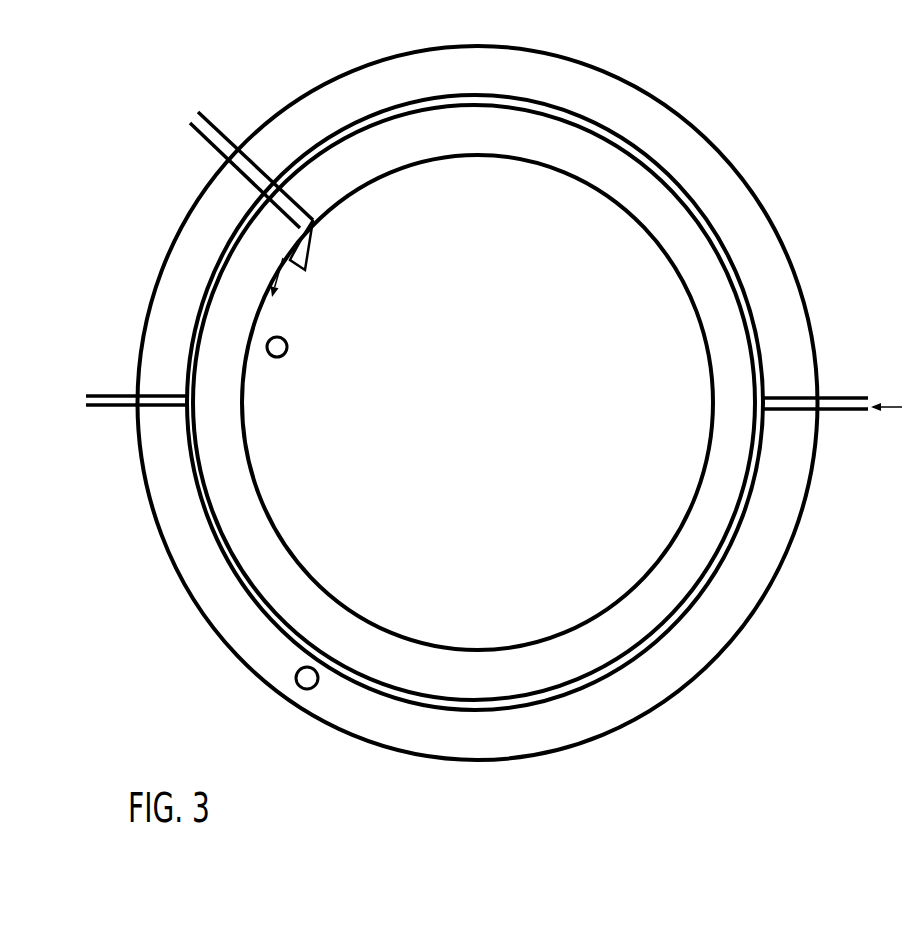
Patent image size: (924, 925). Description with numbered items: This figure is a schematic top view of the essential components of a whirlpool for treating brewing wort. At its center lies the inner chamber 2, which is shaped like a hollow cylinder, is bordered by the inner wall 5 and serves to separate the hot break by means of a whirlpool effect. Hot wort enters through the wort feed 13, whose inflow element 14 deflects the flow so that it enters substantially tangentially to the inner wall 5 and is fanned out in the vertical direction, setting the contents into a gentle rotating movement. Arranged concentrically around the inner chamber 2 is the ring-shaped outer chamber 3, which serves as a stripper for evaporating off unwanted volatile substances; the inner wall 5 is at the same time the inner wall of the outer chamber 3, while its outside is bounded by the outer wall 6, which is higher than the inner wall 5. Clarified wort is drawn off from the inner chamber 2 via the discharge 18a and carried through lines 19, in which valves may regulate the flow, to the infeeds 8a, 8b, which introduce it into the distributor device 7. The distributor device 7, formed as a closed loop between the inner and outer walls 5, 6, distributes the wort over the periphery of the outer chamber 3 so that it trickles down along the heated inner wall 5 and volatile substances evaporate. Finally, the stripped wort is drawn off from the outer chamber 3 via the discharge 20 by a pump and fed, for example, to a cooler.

The inner chamber 2 is at (613, 377).
The outer chamber 3 is at (742, 377).
The inner wall 5 is at (535, 163).
The outer wall 6 is at (662, 108).
The distributor device 7 is at (667, 627).
The infeed 8a is at (184, 394).
The infeed 8b is at (772, 398).
The wort feed 13 is at (306, 216).
The inflow element 14 is at (307, 237).
The discharge 18a is at (289, 343).
The lines 19 is at (103, 394).
The discharge 20 is at (298, 684).